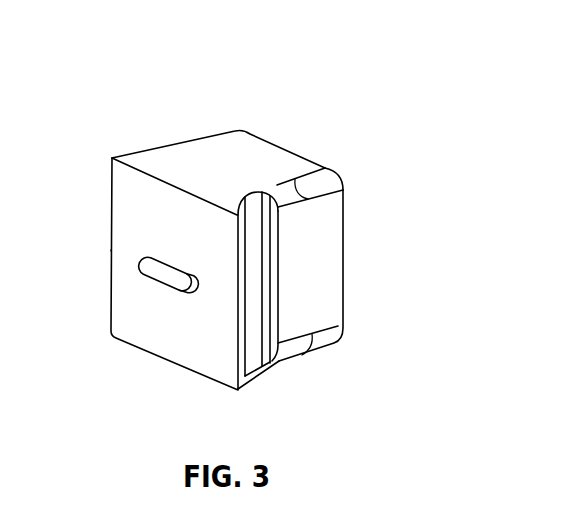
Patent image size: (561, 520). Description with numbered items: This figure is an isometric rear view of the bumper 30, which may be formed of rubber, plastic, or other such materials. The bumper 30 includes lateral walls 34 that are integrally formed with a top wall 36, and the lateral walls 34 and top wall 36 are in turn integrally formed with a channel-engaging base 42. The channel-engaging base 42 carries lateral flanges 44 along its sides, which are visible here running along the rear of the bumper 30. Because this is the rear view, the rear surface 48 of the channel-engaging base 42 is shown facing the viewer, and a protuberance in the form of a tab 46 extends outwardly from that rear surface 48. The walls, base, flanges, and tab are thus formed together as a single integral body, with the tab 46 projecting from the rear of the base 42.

The bumper 30 is at (334, 57).
The lateral walls 34 is at (332, 253).
The top wall 36 is at (273, 160).
The channel-engaging base 42 is at (147, 161).
The lateral flanges 44 is at (110, 250).
The tab 46 is at (162, 288).
The rear surface 48 is at (121, 182).